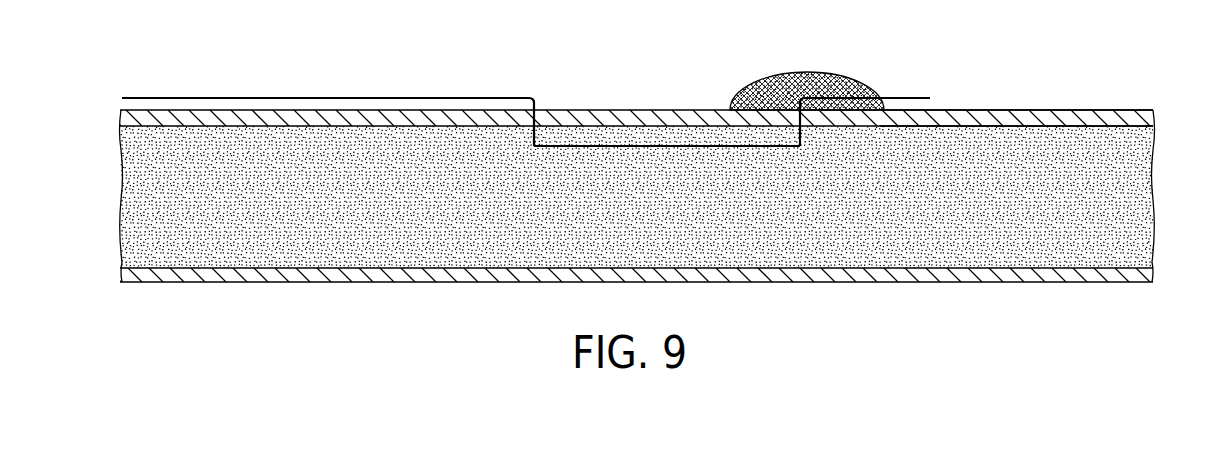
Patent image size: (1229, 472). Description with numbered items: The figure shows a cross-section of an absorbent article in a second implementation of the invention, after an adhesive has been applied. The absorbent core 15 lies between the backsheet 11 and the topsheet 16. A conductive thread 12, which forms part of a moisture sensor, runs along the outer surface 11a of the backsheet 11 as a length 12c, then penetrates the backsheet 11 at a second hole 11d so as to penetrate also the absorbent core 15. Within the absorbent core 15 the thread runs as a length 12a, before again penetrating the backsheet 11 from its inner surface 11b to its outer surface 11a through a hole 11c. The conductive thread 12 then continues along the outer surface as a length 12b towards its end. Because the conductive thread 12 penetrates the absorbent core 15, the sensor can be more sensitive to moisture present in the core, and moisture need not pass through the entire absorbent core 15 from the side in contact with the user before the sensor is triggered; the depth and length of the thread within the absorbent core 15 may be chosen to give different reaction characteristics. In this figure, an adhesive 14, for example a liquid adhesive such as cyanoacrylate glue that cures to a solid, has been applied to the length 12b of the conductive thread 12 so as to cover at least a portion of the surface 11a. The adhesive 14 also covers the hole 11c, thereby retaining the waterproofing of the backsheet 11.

The backsheet 11 is at (165, 114).
The surface of backsheet 11a is at (1107, 110).
The surface of backsheet 11b is at (1137, 128).
The hole 11c is at (801, 74).
The second hole 11d is at (537, 106).
The conductive thread 12 is at (536, 84).
The length of conductive thread 12a is at (680, 140).
The length of conductive thread 12b is at (850, 98).
The length of conductive thread 12c is at (333, 98).
The adhesive 14 is at (766, 80).
The absorbent core 15 is at (120, 193).
The topsheet 16 is at (270, 283).